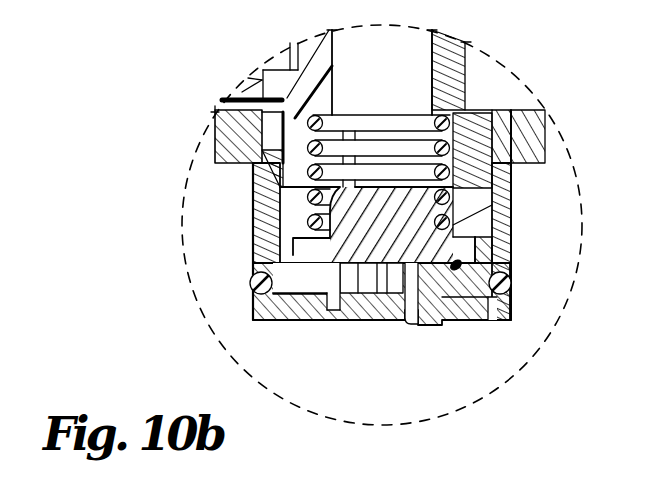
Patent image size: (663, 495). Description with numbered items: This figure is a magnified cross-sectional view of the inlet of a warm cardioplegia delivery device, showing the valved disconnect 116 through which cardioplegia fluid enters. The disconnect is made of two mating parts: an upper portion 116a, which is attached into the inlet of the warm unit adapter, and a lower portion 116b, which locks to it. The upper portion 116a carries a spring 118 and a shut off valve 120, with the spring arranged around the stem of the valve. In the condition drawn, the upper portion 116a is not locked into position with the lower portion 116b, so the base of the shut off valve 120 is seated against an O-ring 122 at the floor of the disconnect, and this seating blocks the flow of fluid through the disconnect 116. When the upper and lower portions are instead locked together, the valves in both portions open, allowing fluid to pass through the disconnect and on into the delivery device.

The valved disconnect 116 is at (238, 207).
The upper portion of the valved disconnect 116a is at (217, 140).
The lower portion of the valved disconnect 116b is at (251, 247).
The spring 118 is at (372, 114).
The shut off valve 120 is at (500, 221).
The O-ring 122 is at (458, 272).